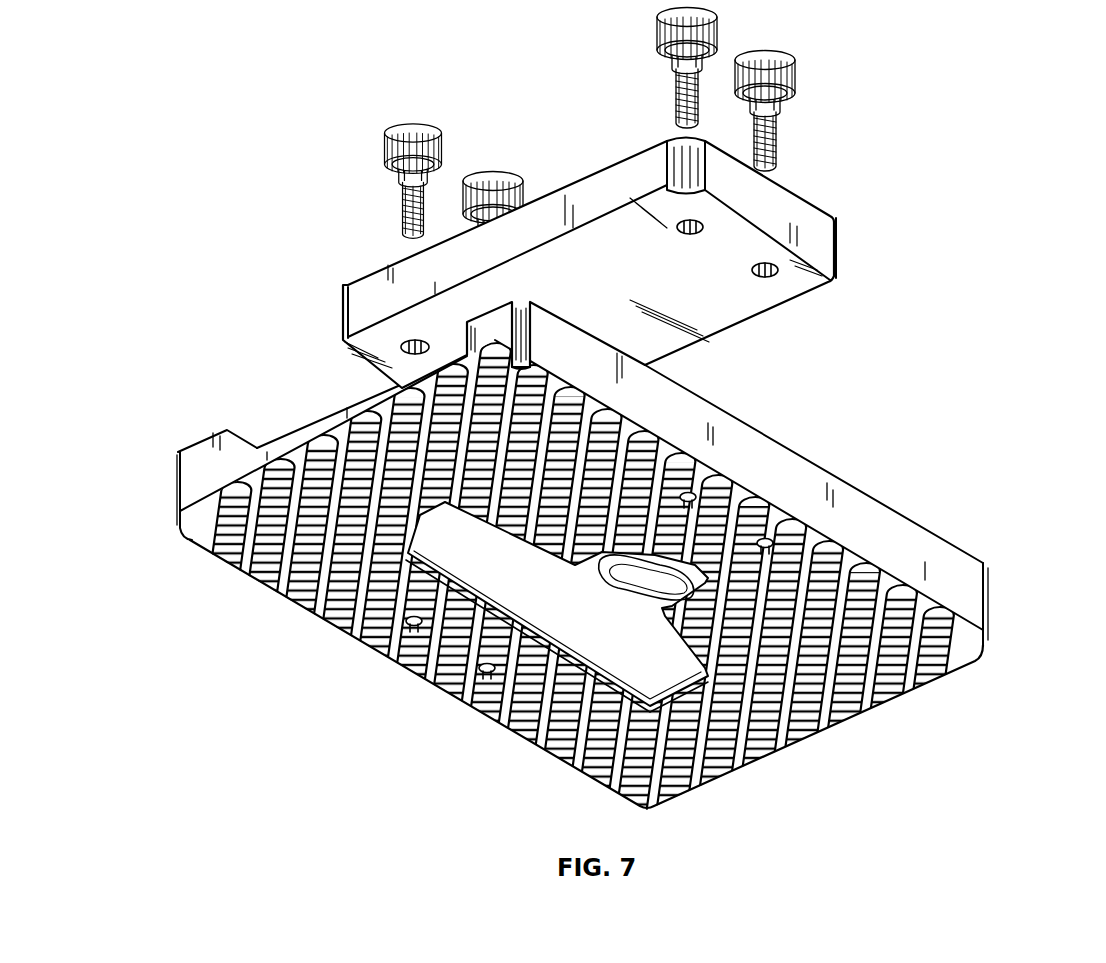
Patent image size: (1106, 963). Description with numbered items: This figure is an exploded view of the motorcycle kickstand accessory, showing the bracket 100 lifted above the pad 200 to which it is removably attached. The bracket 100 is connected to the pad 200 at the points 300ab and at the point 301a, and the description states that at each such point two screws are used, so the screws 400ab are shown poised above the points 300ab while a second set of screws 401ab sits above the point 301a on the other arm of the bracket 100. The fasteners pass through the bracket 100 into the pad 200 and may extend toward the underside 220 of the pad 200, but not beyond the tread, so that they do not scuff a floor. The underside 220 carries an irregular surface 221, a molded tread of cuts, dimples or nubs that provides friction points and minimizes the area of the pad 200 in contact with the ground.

The bracket 100 is at (815, 227).
The pad 200 is at (962, 570).
The underside 220 is at (858, 683).
The irregular surface 221 is at (968, 650).
The points 300ab is at (703, 231).
The point 301a is at (400, 348).
The screws 400ab is at (730, 28).
The fastening screws 401ab is at (487, 178).